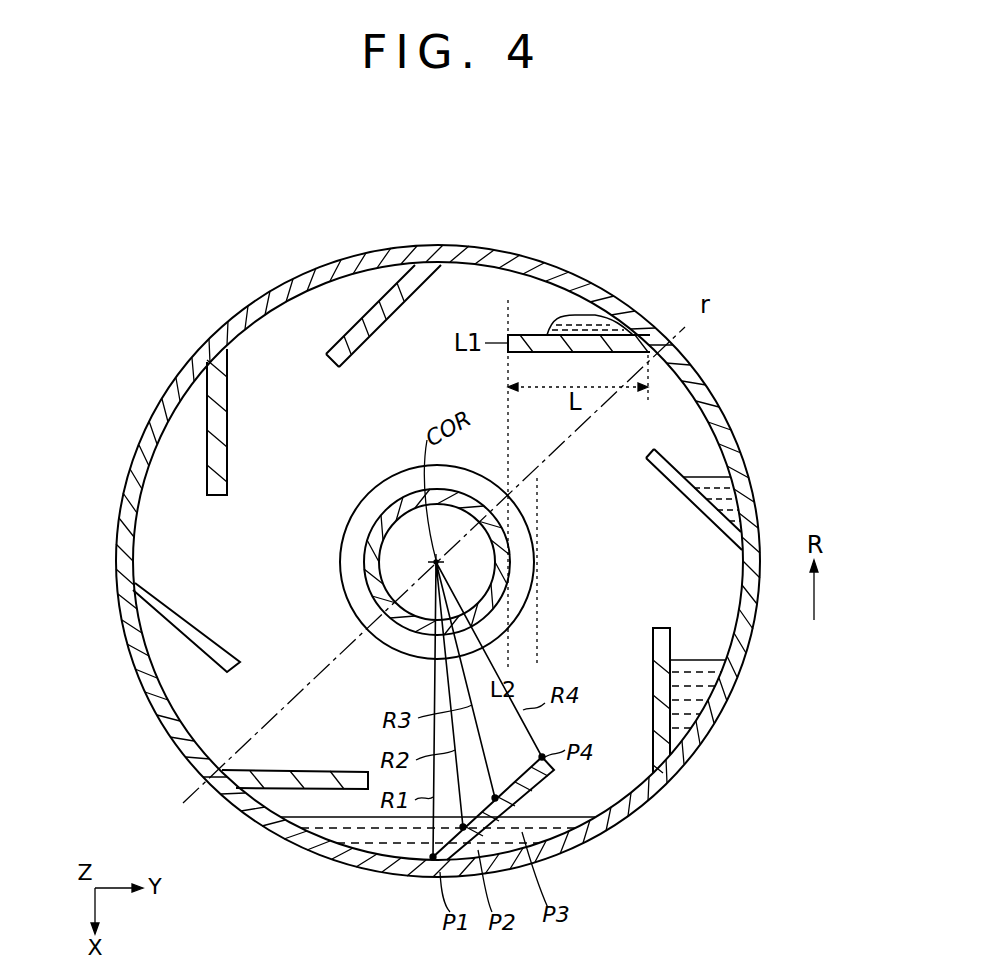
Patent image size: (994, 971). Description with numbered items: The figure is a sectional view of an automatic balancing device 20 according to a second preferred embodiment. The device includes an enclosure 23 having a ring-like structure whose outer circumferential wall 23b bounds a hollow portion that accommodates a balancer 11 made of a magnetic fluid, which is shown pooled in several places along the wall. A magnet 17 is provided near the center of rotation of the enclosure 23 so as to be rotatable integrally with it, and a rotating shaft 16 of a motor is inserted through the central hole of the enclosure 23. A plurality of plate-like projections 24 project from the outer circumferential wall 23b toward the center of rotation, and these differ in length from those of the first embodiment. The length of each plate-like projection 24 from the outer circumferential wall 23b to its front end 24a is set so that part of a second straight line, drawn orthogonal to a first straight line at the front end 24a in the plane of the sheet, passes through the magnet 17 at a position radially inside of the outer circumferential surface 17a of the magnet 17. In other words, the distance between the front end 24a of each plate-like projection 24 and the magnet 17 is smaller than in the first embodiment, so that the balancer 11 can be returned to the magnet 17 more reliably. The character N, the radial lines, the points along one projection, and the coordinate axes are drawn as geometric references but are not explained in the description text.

The automatic balancing device 20 is at (438, 236).
The enclosure 23 is at (748, 460).
The outer circumferential wall 23b is at (750, 512).
The magnet 17 is at (400, 483).
The rotating shaft 16 is at (412, 562).
The outer circumferential surface 17a is at (227, 332).
The nozzle N is at (158, 665).
The plate-like projection 24 is at (737, 448).
The front end 24a is at (525, 335).
The balancer 11 is at (385, 852).